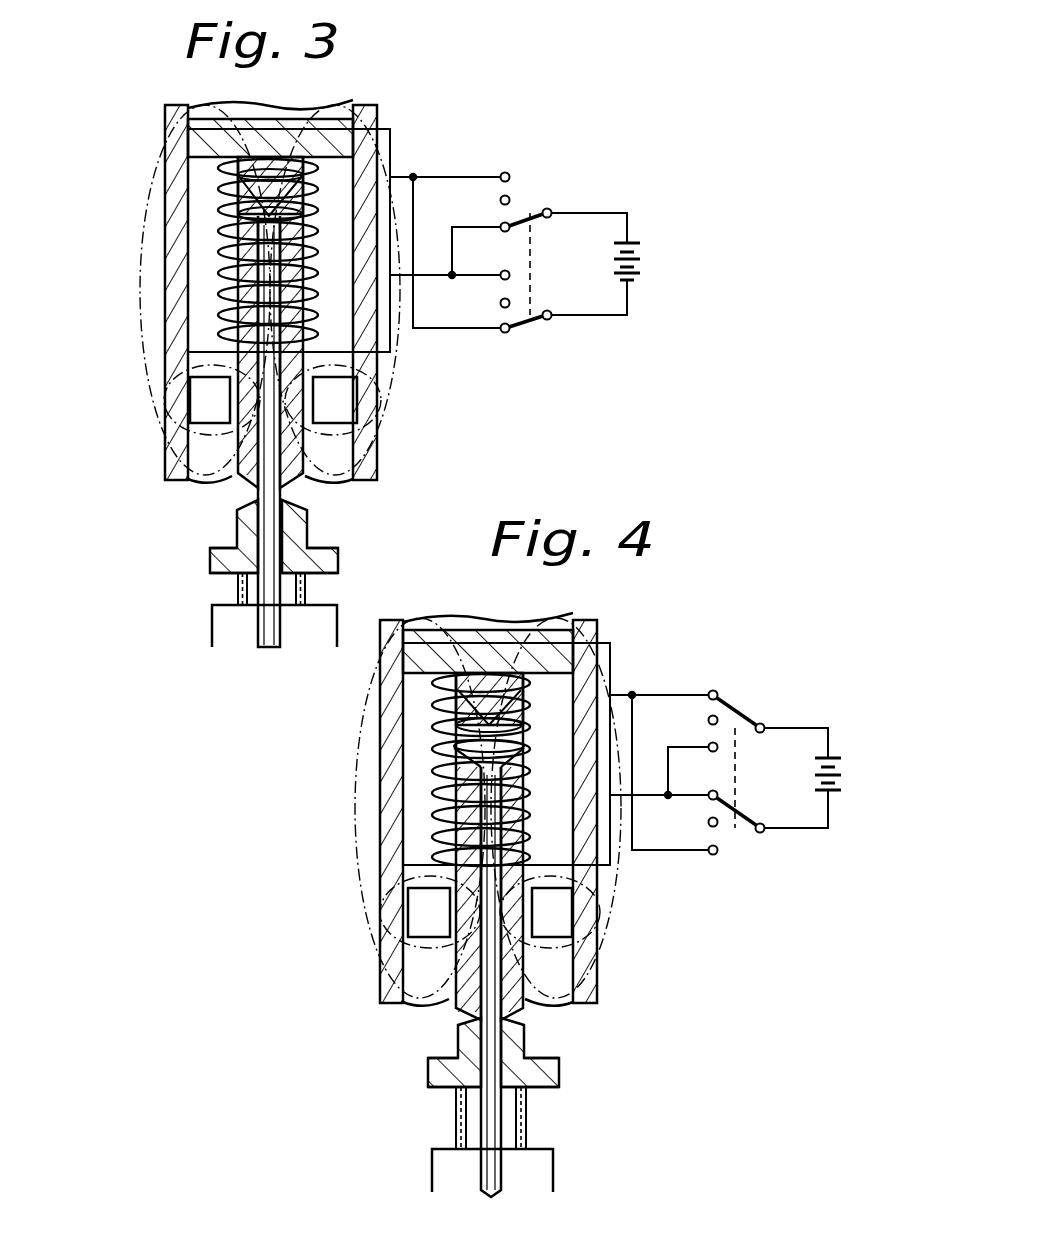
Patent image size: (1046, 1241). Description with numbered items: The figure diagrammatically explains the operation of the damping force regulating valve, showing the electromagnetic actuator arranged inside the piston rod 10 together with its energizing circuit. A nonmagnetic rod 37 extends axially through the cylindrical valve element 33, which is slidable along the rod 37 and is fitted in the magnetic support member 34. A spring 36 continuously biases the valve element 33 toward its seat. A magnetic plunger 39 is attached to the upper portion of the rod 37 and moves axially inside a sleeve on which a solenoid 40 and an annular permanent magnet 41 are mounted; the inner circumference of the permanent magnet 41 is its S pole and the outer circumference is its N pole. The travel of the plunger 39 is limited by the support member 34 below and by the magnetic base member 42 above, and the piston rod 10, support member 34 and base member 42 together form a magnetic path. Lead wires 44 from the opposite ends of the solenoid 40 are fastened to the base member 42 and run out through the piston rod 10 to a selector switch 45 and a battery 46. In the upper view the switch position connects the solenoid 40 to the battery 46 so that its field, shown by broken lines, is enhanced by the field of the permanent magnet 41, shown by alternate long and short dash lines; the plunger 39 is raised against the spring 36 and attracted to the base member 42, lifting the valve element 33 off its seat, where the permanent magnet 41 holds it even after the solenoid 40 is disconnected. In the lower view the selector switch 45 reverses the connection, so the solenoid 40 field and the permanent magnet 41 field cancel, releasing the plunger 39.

In FIG. 3, the piston rod 10 is at (168, 352).
In FIG. 4, the piston rod 10 is at (402, 870).
In FIG. 3, the valve element 33 is at (212, 632).
In FIG. 4, the valve element 33 is at (432, 1178).
In FIG. 3, the support member 34 is at (222, 562).
In FIG. 4, the support member 34 is at (440, 1078).
In FIG. 3, the spring 36 is at (240, 590).
In FIG. 4, the spring 36 is at (455, 1120).
In FIG. 3, the rod 37 is at (272, 508).
In FIG. 4, the rod 37 is at (478, 1012).
In FIG. 3, the plunger 39 is at (222, 312).
In FIG. 4, the plunger 39 is at (440, 828).
In FIG. 3, the solenoid 40 is at (228, 238).
In FIG. 4, the solenoid 40 is at (454, 749).
In FIG. 3, the permanent magnet 41 is at (166, 462).
In FIG. 4, the permanent magnet 41 is at (384, 980).
In FIG. 3, the base member 42 is at (265, 170).
In FIG. 4, the base member 42 is at (455, 684).
In FIG. 3, the lead wires 44 is at (413, 177).
In FIG. 4, the lead wires 44 is at (632, 695).
In FIG. 3, the selector switch 45 is at (556, 207).
In FIG. 4, the selector switch 45 is at (751, 712).
In FIG. 3, the battery 46 is at (632, 265).
In FIG. 4, the battery 46 is at (846, 777).